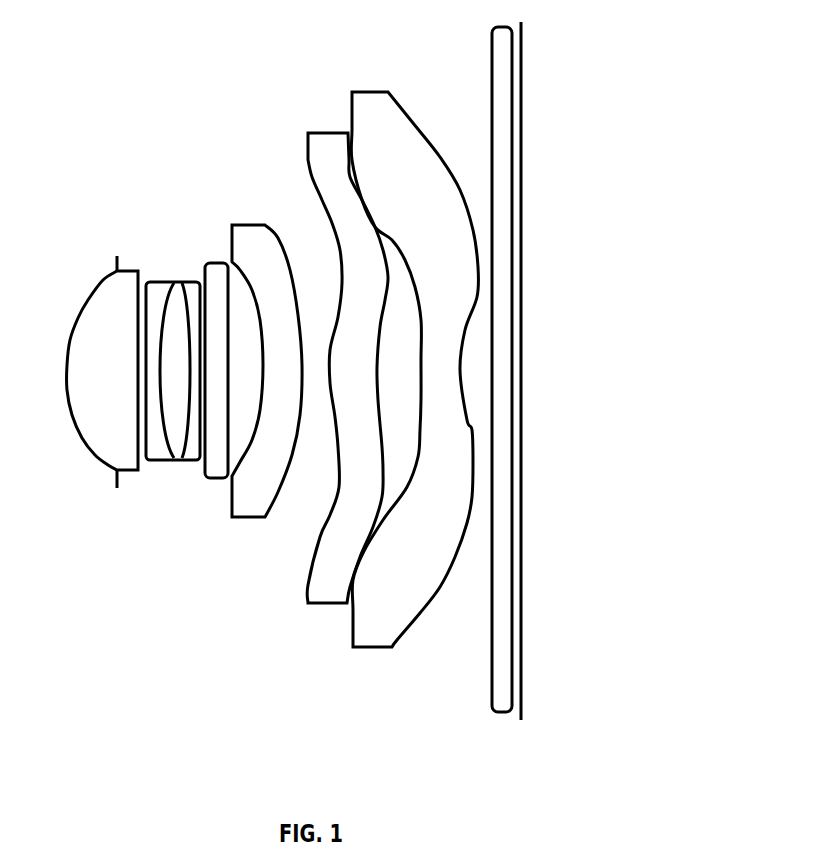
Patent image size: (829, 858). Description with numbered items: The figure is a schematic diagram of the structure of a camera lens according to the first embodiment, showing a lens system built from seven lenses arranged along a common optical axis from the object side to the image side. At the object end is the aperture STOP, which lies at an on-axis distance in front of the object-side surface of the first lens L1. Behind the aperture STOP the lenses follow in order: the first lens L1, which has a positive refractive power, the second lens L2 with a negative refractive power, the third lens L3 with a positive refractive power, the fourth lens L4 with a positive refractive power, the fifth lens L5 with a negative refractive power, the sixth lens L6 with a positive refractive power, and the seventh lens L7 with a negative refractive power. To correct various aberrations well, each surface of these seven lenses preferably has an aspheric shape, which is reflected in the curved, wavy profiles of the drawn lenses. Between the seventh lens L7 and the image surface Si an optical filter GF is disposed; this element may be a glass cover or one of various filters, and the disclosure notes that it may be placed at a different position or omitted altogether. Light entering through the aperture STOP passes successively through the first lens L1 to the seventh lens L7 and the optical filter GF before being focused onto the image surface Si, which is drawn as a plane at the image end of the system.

The aperture STOP is at (112, 254).
The first lens L1 is at (102, 367).
The second lens L2 is at (170, 355).
The third lens L3 is at (176, 354).
The fourth lens L4 is at (213, 359).
The fifth lens L5 is at (267, 361).
The sixth lens L6 is at (347, 357).
The seventh lens L7 is at (414, 359).
The optical filter GF is at (498, 357).
The image surface Si is at (527, 189).